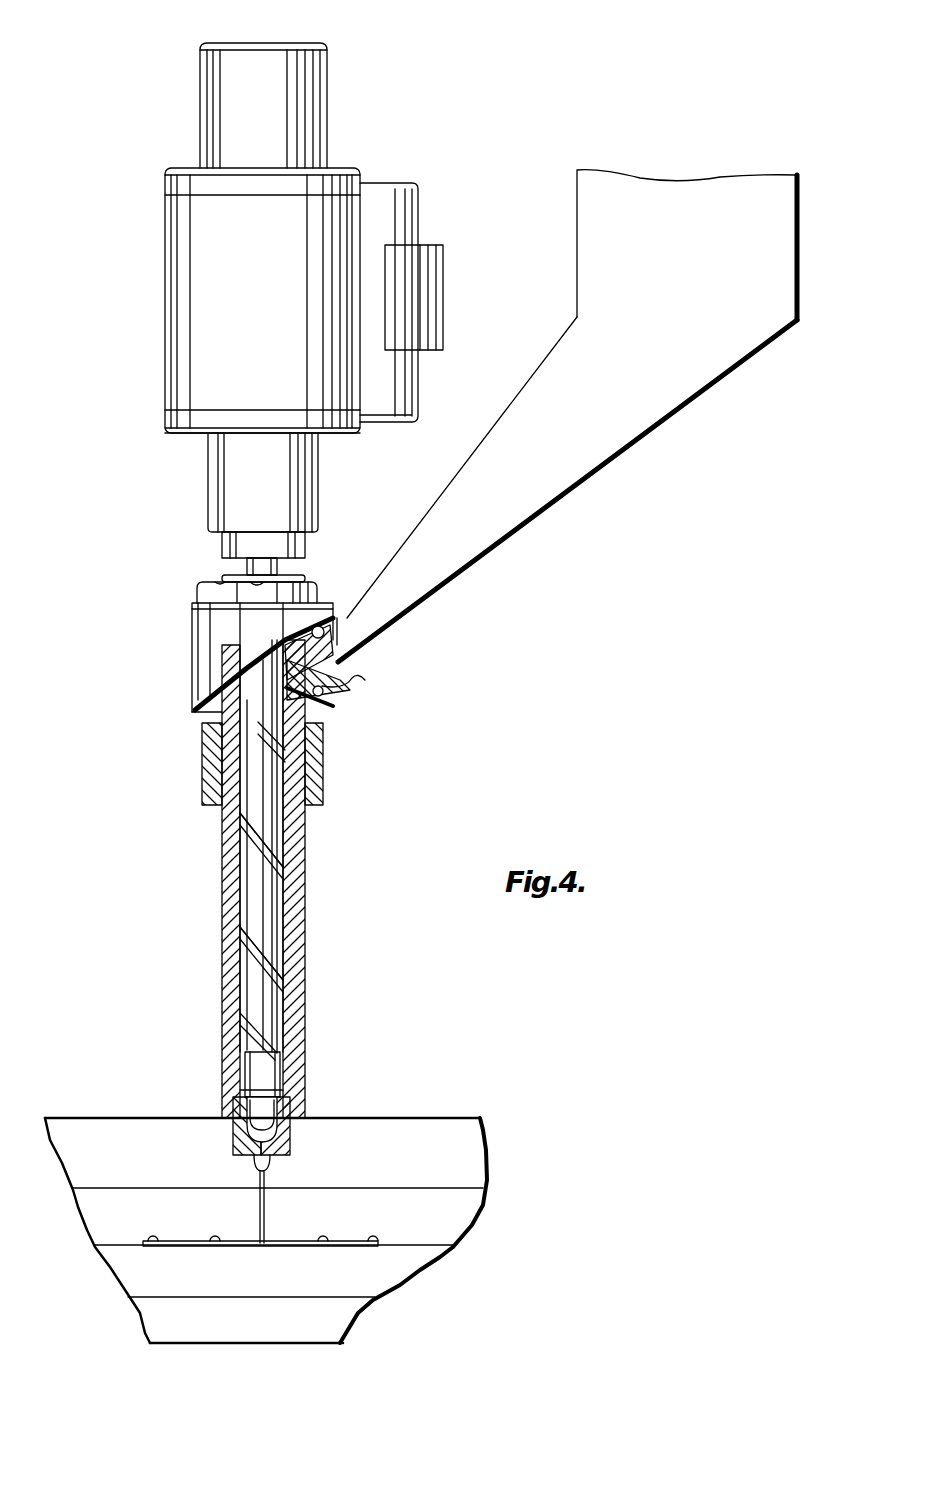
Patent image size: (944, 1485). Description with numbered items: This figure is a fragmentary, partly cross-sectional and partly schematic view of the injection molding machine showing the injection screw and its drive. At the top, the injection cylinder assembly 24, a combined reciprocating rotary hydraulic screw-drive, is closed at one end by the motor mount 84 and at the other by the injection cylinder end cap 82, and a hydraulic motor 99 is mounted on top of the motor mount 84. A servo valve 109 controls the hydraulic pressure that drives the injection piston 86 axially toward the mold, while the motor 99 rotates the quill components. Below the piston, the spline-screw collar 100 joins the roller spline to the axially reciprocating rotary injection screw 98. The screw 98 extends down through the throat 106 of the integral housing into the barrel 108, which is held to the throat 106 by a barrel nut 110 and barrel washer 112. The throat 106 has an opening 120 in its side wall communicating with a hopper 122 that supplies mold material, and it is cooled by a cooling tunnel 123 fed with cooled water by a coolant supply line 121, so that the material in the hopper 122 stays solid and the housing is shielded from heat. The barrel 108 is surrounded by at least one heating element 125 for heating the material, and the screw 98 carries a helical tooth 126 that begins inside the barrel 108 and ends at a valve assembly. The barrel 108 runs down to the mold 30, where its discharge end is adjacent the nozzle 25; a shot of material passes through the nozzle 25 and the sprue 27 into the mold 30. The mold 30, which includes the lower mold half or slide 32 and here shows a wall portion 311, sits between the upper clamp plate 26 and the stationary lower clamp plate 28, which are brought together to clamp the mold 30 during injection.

The hydraulic motor 99 is at (318, 50).
The motor mount 84 is at (358, 177).
The injection cylinder assembly 24 is at (200, 262).
The servo valve 109 is at (440, 282).
The injection cylinder end cap 82 is at (168, 420).
The injection piston 86 is at (218, 485).
The spline-screw collar 100 is at (232, 550).
The injection screw 98 is at (285, 575).
The barrel washer 112 is at (202, 600).
The barrel nut 110 is at (312, 595).
The throat 106 is at (205, 667).
The cooling tunnel 123 is at (345, 622).
The opening 120 is at (365, 657).
The coolant supply line 121 is at (356, 680).
The heating element 125 is at (315, 760).
The barrel 108 is at (310, 860).
The helical tooth 126 is at (258, 945).
The upper clamp plate 26 is at (133, 1130).
The nozzle 25 is at (280, 1140).
The sprue 27 is at (272, 1178).
The side wall 311 is at (465, 1208).
The lower mold half 32 is at (415, 1280).
The mold 30 is at (513, 1258).
The lower clamp plate 28 is at (222, 1330).
The hopper 122 is at (612, 455).